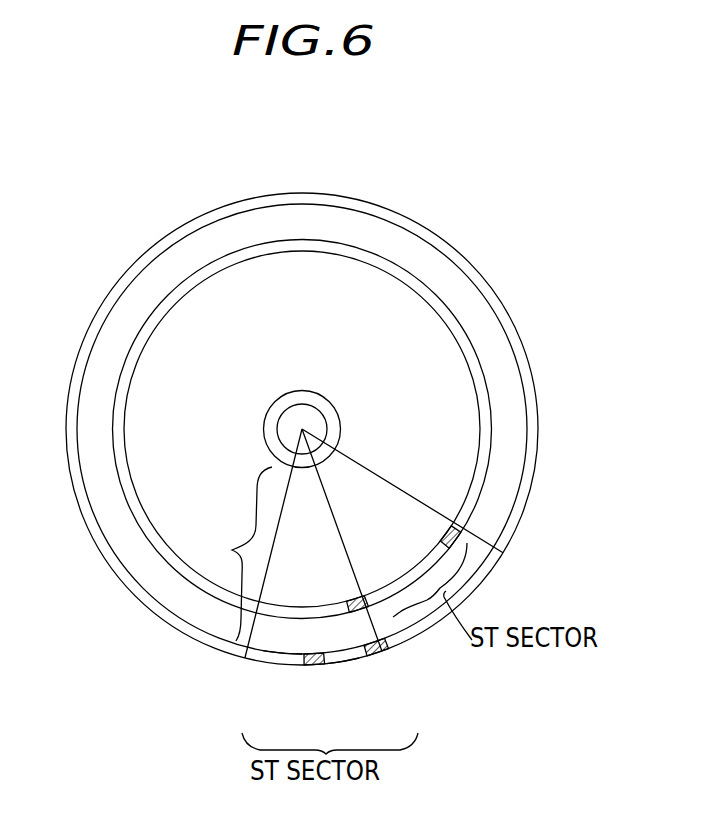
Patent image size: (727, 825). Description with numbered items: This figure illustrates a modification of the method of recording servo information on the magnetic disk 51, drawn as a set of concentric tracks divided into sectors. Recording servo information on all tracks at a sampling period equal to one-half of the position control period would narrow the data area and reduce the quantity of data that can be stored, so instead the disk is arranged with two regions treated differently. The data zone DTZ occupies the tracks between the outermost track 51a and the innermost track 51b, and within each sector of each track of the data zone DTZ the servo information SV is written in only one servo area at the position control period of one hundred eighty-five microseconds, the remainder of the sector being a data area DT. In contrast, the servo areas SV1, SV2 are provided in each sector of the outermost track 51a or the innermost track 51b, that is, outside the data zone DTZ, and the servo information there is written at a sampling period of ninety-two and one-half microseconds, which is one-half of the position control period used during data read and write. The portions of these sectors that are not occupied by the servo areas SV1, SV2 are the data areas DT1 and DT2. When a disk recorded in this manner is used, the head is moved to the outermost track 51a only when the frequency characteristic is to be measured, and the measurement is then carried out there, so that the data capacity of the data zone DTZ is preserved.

The magnetic disk 51 is at (492, 268).
The outermost track 51a is at (330, 193).
The innermost track 51b is at (336, 418).
The data area DT is at (400, 579).
The data zone DTZ is at (227, 548).
The servo information SV is at (450, 533).
The first servo area SV1 is at (384, 656).
The second servo area SV2 is at (312, 666).
The first data area DT1 is at (353, 663).
The second data area DT2 is at (262, 666).